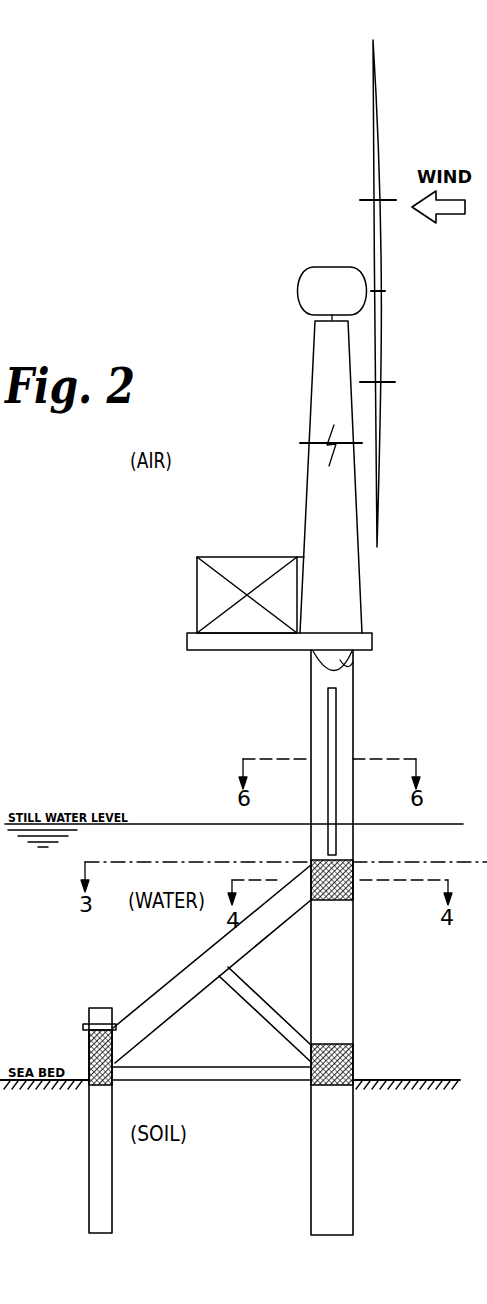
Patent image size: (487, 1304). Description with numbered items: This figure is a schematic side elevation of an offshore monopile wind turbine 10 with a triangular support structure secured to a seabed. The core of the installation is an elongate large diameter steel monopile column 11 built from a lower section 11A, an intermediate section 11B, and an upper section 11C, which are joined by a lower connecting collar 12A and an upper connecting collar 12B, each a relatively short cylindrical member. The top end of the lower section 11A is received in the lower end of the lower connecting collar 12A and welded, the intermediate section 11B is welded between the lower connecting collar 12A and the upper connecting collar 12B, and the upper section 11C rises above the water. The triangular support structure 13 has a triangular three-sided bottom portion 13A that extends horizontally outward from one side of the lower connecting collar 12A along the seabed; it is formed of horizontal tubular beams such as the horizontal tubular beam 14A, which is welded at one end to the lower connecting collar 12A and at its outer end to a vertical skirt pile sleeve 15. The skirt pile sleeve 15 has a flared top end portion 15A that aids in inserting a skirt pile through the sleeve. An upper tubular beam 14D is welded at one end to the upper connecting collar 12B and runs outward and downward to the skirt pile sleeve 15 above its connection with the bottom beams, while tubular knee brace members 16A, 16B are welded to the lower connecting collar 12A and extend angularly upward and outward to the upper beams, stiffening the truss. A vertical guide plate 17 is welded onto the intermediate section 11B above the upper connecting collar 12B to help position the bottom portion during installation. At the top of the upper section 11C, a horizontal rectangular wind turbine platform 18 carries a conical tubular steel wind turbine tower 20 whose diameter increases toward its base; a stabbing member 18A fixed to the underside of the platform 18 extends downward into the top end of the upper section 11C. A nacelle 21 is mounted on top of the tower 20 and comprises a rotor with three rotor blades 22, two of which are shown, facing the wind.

The offshore monopile wind turbine 10 is at (180, 725).
The monopile column 11 is at (364, 984).
The lower section 11A is at (355, 1153).
The intermediate section 11B is at (354, 957).
The upper section 11C is at (353, 730).
The lower connecting collar 12A is at (354, 1058).
The upper connecting collar 12B is at (354, 896).
The triangular support structure 13 is at (187, 943).
The triangular three-sided bottom portion 13A is at (208, 1082).
The horizontal tubular beam 14A is at (250, 1076).
The upper tubular beam 14D is at (172, 981).
The skirt pile sleeve 15 is at (88, 1050).
The flared top end portion 15A is at (84, 1027).
The tubular knee brace member 16A is at (247, 1002).
The tubular knee brace member 16B is at (265, 1019).
The vertical guide plate 17 is at (332, 727).
The wind turbine platform 18 is at (240, 650).
The stabbing member 18A is at (354, 668).
The wind turbine tower 20 is at (315, 490).
The nacelle 21 is at (318, 278).
The rotor blades 22 is at (380, 136).